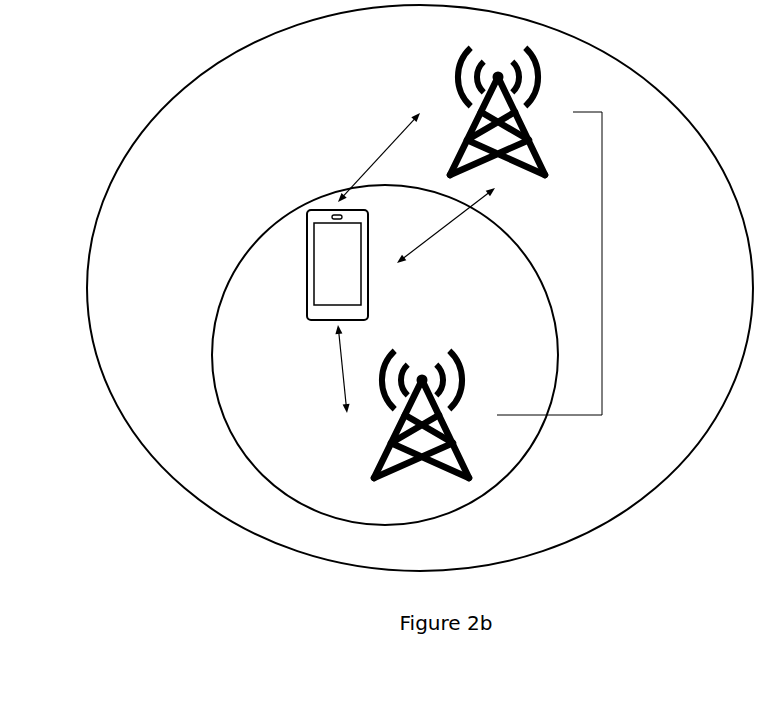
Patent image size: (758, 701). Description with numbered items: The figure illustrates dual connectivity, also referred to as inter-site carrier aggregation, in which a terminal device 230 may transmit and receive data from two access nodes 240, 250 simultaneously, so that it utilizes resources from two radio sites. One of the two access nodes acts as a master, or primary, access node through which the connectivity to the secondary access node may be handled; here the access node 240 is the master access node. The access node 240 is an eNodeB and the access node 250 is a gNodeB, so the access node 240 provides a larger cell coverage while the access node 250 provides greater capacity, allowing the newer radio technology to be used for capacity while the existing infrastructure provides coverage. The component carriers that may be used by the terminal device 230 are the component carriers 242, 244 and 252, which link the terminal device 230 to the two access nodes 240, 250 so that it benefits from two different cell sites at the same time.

The terminal device 230 is at (319, 265).
The access node 240 is at (497, 106).
The access node 250 is at (421, 411).
The component carrier 242 is at (379, 157).
The component carrier 244 is at (446, 225).
The component carrier 252 is at (323, 369).